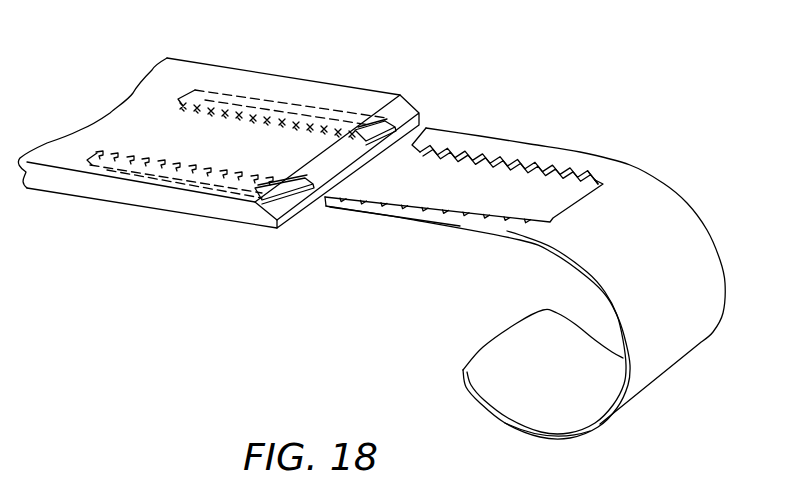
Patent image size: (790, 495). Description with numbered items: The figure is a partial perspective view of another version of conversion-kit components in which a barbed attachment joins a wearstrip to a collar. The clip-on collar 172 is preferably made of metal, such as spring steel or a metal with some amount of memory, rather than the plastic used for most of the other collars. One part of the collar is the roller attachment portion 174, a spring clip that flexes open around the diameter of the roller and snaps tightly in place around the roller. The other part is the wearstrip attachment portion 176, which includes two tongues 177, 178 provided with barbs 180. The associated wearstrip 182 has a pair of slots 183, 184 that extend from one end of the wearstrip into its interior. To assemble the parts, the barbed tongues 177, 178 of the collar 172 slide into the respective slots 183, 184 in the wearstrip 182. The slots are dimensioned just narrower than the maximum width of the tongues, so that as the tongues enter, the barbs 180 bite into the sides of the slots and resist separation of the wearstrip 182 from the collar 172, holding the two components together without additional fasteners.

The clip-on collar 172 is at (670, 205).
The roller attachment portion 174 is at (568, 423).
The wearstrip attachment portion 176 is at (470, 143).
The tongue 177 is at (523, 152).
The tongue 178 is at (475, 222).
The barbs 180 is at (435, 207).
The wearstrip 182 is at (180, 70).
The slot 183 is at (300, 113).
The slot 184 is at (227, 180).